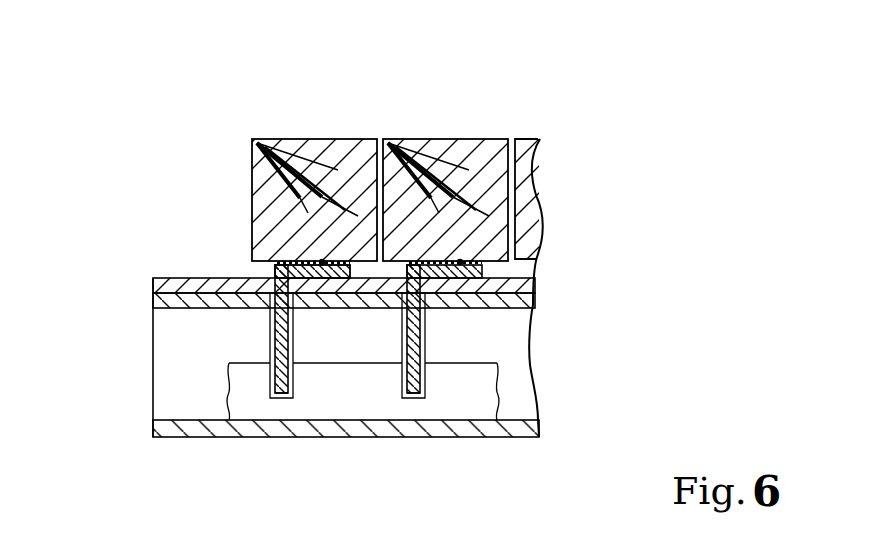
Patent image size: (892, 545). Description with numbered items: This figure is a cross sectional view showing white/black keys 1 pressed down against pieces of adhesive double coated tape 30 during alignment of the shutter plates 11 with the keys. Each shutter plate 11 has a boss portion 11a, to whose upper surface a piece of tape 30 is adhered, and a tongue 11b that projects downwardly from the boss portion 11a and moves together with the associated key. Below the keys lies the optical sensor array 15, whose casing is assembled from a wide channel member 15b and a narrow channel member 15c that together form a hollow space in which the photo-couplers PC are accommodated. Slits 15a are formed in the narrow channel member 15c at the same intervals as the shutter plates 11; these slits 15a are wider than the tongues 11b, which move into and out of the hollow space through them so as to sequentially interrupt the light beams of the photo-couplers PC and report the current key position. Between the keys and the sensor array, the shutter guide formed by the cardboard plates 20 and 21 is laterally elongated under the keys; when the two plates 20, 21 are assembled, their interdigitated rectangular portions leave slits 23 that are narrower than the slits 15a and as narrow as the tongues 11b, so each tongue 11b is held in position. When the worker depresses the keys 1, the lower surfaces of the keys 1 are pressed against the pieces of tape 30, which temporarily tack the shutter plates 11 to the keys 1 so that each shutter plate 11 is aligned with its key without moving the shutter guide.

The white/black key 1 is at (400, 150).
The shutter plate 11 is at (260, 271).
The boss portion 11a is at (321, 261).
The tongue 11b is at (280, 398).
The optical sensor array 15 is at (142, 388).
The slit 15a is at (448, 333).
The wide channel member 15b is at (536, 437).
The narrow channel member 15c is at (537, 323).
The plate 20 is at (172, 285).
The plate 21 is at (296, 300).
The slit 23 is at (269, 310).
The piece of adhesive double coated tape 30 is at (297, 262).
The photo-coupler PC is at (500, 393).